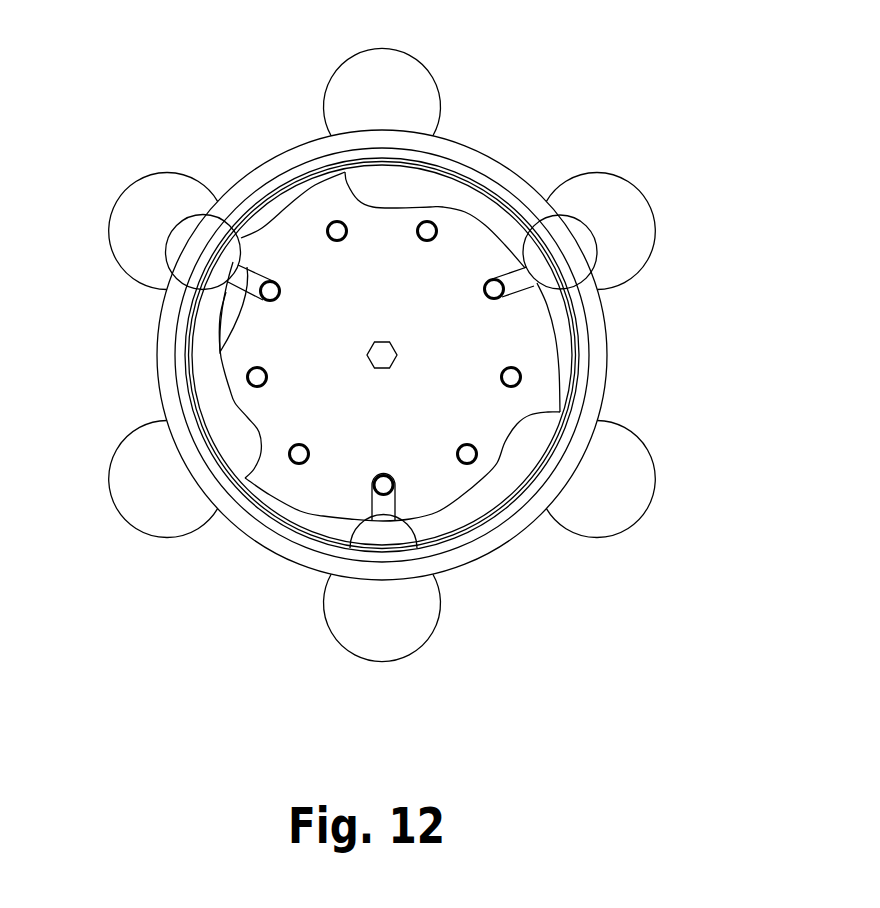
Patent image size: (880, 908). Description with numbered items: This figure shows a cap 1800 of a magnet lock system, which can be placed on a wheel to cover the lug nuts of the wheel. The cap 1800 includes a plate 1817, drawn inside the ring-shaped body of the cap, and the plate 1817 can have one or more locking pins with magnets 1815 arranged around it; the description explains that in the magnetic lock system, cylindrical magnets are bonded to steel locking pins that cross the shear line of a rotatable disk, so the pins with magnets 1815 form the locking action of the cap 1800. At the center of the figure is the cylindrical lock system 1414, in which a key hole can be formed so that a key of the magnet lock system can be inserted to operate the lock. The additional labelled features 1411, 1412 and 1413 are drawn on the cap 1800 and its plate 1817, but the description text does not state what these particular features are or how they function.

The cap 1800 is at (267, 157).
The plate 1817 is at (440, 207).
The magnets 1815 is at (521, 376).
The tab 1411 is at (233, 346).
The base plate 1412 is at (323, 508).
The rim projection 1413 is at (437, 515).
The cylindrical lock system 1414 is at (395, 372).